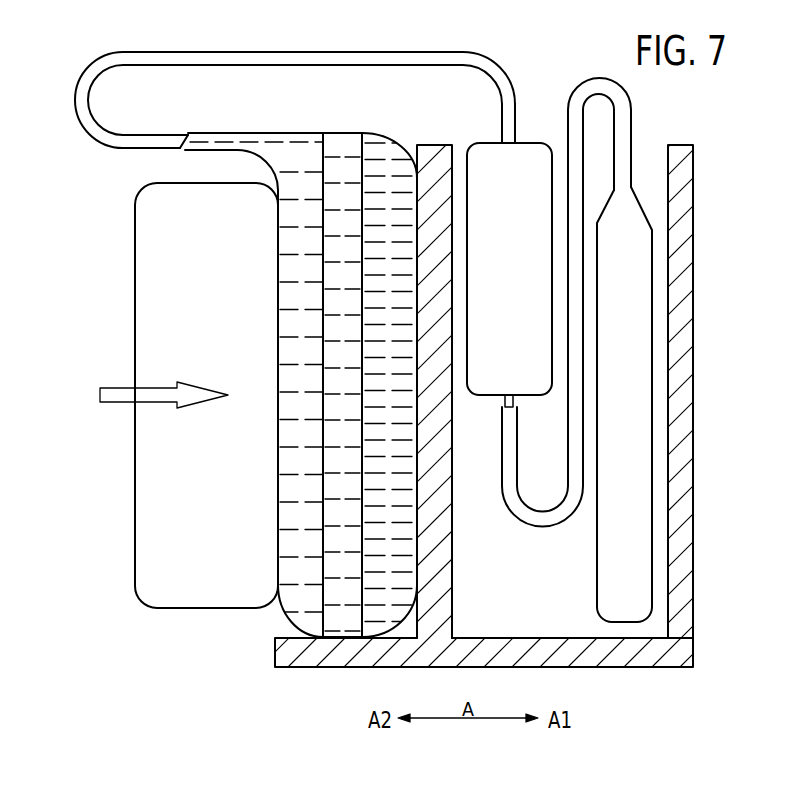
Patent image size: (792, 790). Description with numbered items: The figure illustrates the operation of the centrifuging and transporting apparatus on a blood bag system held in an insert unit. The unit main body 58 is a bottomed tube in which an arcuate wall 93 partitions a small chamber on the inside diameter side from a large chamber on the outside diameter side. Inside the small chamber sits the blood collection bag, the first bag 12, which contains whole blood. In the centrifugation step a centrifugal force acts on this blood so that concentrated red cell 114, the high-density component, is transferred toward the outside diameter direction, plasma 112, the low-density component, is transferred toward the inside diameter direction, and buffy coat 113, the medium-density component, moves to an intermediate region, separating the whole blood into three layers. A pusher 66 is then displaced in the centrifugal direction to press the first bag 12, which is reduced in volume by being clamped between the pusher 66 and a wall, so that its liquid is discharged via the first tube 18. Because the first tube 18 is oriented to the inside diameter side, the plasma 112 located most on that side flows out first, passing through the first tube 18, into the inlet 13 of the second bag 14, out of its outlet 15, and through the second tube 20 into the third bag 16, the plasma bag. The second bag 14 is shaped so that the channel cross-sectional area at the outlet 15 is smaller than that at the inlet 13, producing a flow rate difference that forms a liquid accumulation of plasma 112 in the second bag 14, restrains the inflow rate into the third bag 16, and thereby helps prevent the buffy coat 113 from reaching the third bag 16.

The first bag 12 is at (348, 367).
The inlet 13 is at (502, 137).
The second bag 14 is at (525, 160).
The outlet 15 is at (505, 400).
The third bag 16 is at (637, 310).
The first tube 18 is at (180, 58).
The second tube 20 is at (624, 112).
The unit main body 58 is at (694, 222).
The pusher 66 is at (140, 256).
The arcuate wall 93 is at (437, 565).
The plasma 112 is at (263, 143).
The buffy coat 113 is at (338, 558).
The concentrated red cell 114 is at (391, 390).